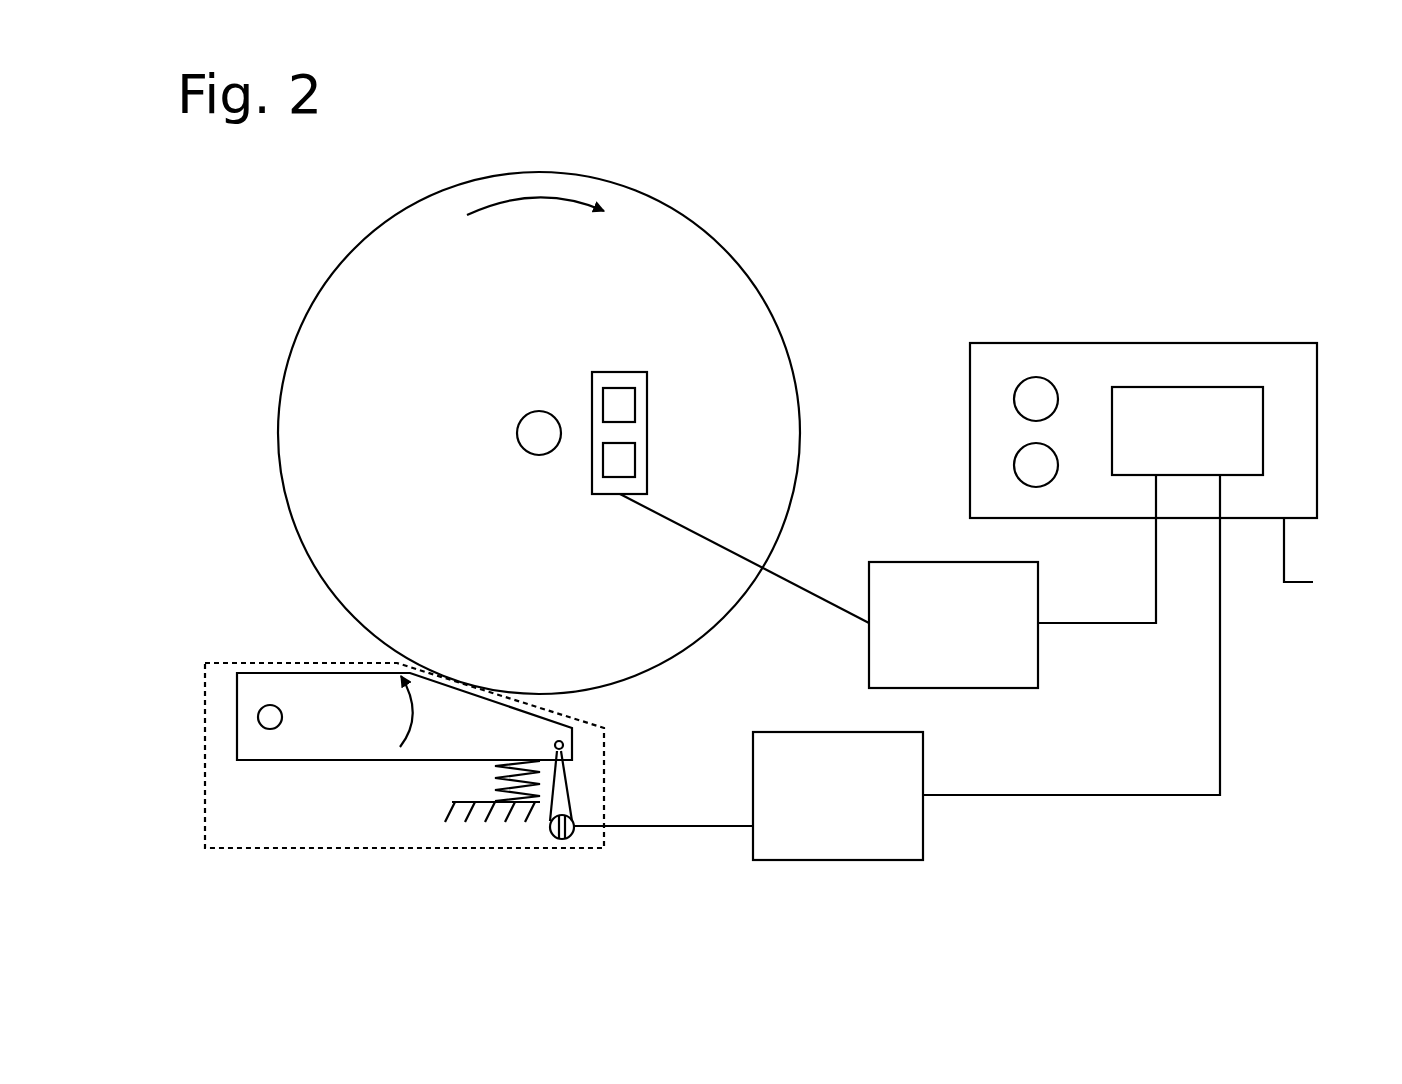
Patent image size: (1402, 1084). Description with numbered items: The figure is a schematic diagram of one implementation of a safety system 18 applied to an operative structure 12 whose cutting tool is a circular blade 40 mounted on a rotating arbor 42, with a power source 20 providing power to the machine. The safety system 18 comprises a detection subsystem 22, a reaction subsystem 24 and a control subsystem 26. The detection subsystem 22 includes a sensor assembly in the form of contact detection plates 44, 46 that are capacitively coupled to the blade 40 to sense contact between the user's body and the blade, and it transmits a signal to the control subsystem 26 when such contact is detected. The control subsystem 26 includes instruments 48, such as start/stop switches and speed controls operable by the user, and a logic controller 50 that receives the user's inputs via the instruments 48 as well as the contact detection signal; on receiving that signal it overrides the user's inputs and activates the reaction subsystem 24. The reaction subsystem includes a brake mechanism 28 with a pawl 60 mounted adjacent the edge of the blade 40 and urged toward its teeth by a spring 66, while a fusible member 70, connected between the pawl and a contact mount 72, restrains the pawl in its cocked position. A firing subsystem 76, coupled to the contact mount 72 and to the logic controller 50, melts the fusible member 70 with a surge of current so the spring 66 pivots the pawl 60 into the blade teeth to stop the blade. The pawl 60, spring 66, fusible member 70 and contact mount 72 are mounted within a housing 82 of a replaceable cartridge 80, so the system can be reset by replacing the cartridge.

The operative structure 12 is at (784, 183).
The safety system 18 is at (1129, 226).
The power source 20 is at (1343, 562).
The detection subsystem 22 is at (976, 612).
The reaction subsystem 24 is at (884, 916).
The control subsystem 26 is at (1185, 343).
The brake mechanism 28 is at (302, 779).
The circular blade 40 is at (399, 295).
The arbor 42 is at (528, 438).
The contact detection plate 44 is at (629, 400).
The contact detection plate 46 is at (629, 455).
The instruments 48 is at (1024, 400).
The logic controller 50 is at (1199, 437).
The pawl 60 is at (297, 683).
The spring 66 is at (470, 782).
The fusible member 70 is at (569, 801).
The contact mount 72 is at (555, 832).
The firing subsystem 76 is at (861, 779).
The replaceable cartridge 80 is at (253, 877).
The housing 82 is at (315, 847).